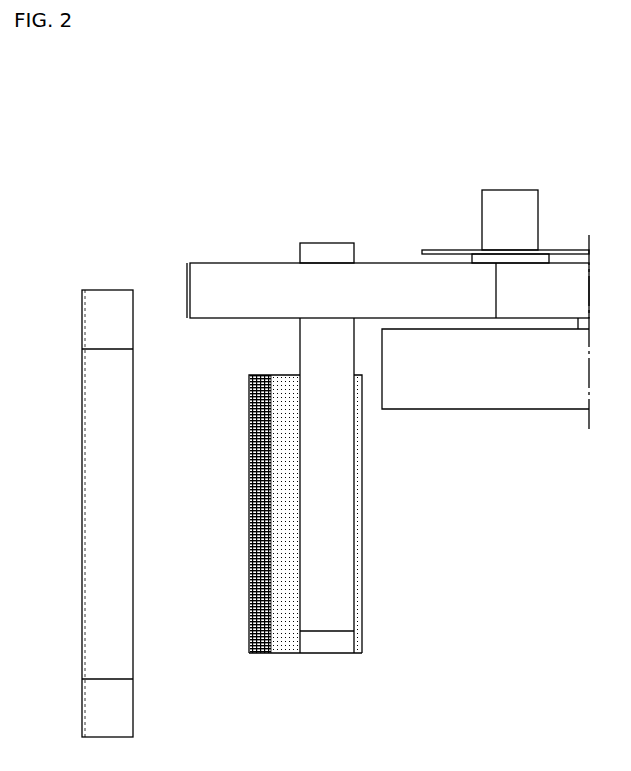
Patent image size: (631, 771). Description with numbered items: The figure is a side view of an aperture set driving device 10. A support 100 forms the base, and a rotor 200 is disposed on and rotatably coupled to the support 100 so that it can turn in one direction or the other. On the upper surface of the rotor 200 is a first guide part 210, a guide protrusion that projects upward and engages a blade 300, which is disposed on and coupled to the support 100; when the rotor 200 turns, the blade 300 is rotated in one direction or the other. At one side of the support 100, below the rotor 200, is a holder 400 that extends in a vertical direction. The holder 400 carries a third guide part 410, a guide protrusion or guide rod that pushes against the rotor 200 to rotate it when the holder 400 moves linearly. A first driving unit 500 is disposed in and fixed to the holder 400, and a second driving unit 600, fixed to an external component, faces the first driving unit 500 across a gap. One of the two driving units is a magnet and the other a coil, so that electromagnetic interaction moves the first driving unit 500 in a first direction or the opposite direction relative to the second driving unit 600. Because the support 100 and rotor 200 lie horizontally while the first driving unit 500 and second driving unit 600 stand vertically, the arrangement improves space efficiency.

The aperture set driving device 10 is at (141, 93).
The support 100 is at (520, 398).
The rotor 200 is at (210, 282).
The first guide part 210 is at (523, 200).
The blade 300 is at (449, 252).
The holder 400 is at (362, 640).
The third guide part 410 is at (328, 250).
The first driving unit 500 is at (260, 642).
The second driving unit 600 is at (99, 303).